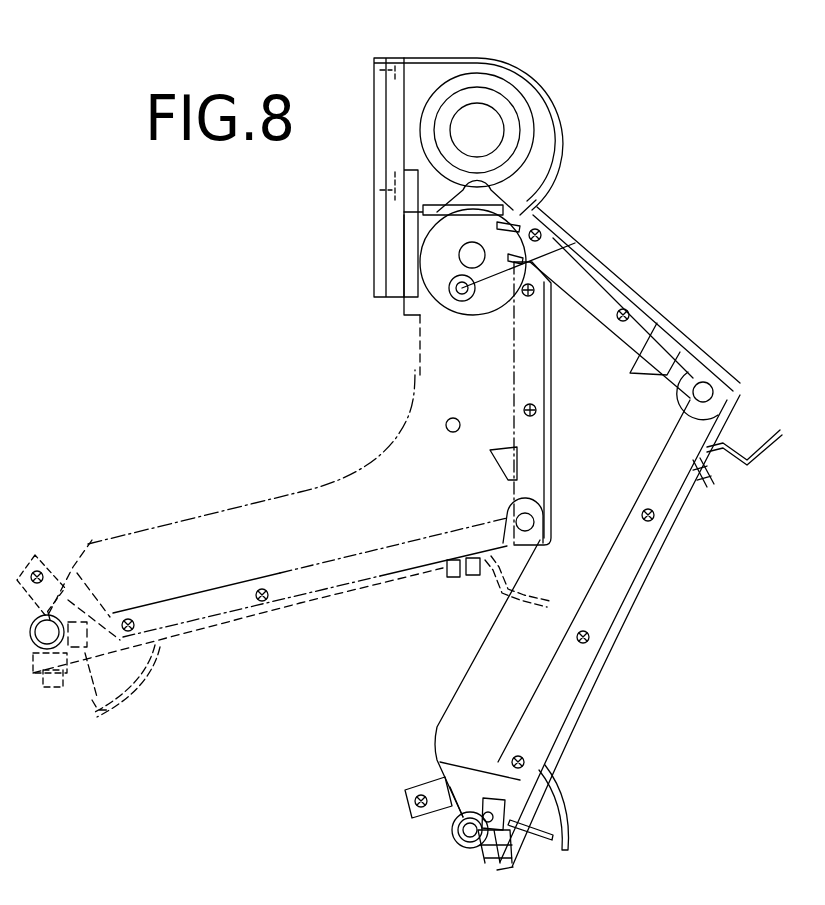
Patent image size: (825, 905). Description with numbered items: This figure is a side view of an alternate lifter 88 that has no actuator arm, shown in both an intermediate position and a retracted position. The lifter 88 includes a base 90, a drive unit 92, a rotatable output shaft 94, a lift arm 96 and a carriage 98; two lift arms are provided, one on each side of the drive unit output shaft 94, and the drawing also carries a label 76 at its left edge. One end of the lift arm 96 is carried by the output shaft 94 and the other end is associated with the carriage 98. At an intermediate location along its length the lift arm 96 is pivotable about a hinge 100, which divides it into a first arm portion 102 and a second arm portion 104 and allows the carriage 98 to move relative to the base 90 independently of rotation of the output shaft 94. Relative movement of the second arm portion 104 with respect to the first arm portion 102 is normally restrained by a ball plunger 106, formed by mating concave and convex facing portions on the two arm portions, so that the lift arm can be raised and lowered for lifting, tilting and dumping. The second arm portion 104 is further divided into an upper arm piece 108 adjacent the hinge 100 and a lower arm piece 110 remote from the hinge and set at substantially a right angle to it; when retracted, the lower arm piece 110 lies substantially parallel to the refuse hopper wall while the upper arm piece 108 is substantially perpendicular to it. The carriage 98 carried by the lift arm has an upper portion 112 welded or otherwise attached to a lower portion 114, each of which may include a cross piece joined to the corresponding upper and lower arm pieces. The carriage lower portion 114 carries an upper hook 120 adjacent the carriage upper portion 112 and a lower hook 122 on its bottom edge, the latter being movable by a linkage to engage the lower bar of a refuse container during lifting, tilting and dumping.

The frame member 76 is at (80, 518).
The lifter 88 is at (712, 160).
The base 90 is at (396, 56).
The drive unit 92 is at (510, 75).
The rotatable output shaft 94 is at (505, 125).
The lift arm 96 is at (541, 203).
The carriage 98 is at (687, 568).
The hinge 100 is at (438, 268).
The first arm portion 102 is at (430, 190).
The second arm portion 104 is at (487, 323).
The ball plunger 106 is at (560, 248).
The upper arm piece 108 is at (580, 327).
The lower arm piece 110 is at (198, 540).
The carriage upper portion 112 is at (701, 345).
The carriage lower portion 114 is at (262, 620).
The upper hook 120 is at (778, 433).
The lower hook 122 is at (570, 807).